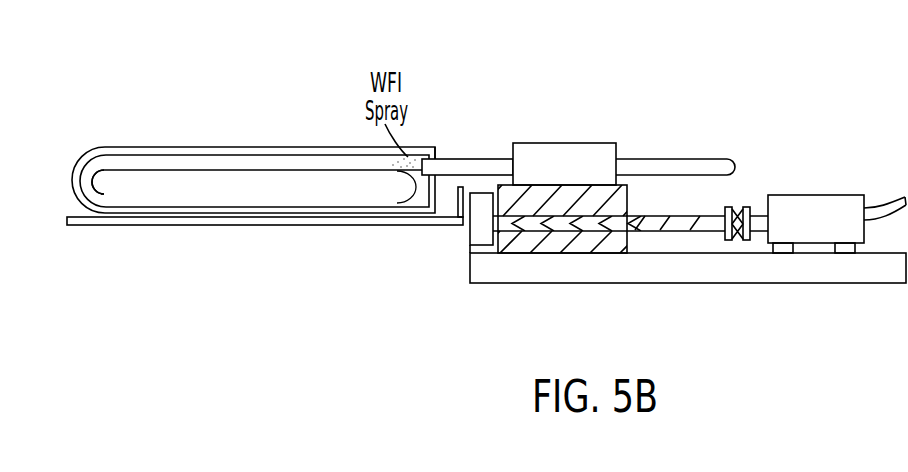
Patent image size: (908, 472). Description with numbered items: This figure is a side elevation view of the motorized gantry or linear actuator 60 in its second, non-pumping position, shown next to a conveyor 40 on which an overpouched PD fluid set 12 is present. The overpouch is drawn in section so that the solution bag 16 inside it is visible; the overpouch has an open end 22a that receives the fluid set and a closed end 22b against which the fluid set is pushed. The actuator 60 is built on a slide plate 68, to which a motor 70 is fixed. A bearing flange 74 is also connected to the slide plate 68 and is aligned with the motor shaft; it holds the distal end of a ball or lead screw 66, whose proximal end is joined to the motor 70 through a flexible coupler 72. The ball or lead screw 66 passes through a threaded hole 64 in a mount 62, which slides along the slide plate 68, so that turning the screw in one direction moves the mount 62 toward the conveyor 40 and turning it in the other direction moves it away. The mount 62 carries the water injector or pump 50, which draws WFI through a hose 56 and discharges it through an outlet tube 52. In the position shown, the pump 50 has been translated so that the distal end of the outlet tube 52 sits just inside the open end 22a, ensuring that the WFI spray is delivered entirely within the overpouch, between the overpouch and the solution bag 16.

The overpouched PD fluid set 12 is at (97, 147).
The solution bag 16 is at (222, 168).
The open end 22a is at (438, 151).
The closed end 22b is at (100, 193).
The conveyor 40 is at (278, 222).
The water injector or pump 50 is at (563, 150).
The outlet tube 52 is at (485, 158).
The hose 56 is at (665, 158).
The motorized gantry or linear actuator 60 is at (655, 252).
The mount 62 is at (627, 210).
The threaded hole 64 is at (648, 230).
The ball or lead screw 66 is at (700, 230).
The slide plate 68 is at (847, 285).
The motor 70 is at (840, 208).
The flexible coupler 72 is at (743, 242).
The bearing flange 74 is at (470, 238).